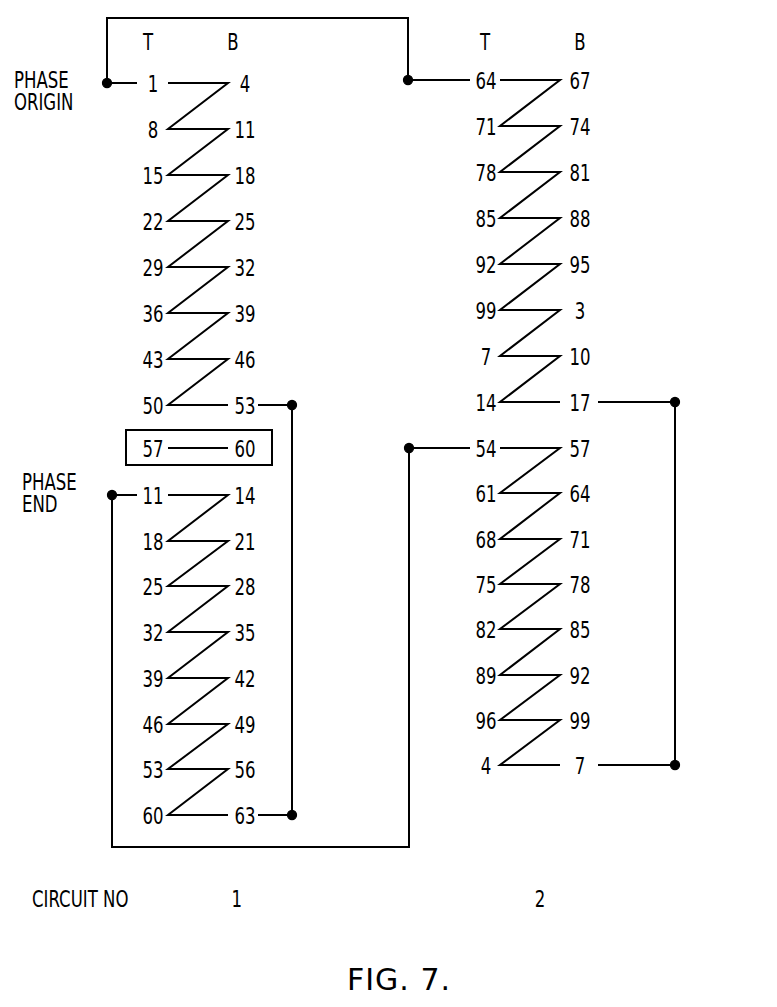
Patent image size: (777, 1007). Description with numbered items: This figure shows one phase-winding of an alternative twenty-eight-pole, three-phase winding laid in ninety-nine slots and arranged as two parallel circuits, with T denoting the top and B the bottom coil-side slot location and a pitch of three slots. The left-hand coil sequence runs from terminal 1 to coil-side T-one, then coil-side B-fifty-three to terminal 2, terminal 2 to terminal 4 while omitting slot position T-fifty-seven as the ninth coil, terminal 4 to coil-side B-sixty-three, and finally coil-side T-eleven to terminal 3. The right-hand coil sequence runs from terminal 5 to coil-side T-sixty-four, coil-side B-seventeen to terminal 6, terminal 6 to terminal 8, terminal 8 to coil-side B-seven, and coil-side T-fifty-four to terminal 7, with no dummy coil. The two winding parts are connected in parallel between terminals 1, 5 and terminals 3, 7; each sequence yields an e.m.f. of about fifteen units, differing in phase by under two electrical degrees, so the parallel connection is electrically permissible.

The terminal 1 is at (107, 83).
The terminal 2 is at (292, 405).
The terminal 3 is at (112, 495).
The terminal 4 is at (292, 815).
The terminal 5 is at (408, 80).
The terminal 6 is at (675, 402).
The terminal 7 is at (409, 448).
The terminal 8 is at (675, 765).